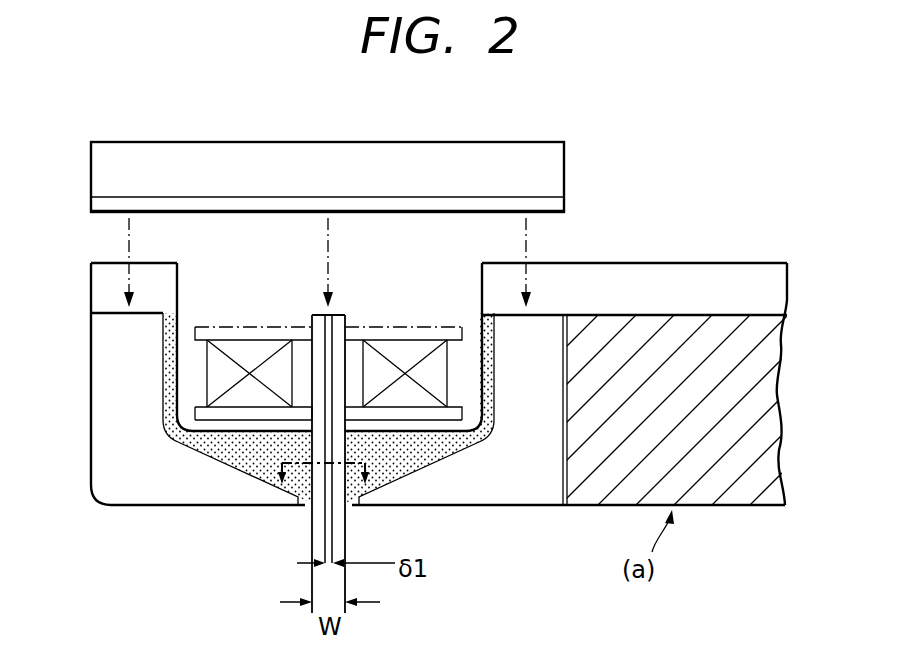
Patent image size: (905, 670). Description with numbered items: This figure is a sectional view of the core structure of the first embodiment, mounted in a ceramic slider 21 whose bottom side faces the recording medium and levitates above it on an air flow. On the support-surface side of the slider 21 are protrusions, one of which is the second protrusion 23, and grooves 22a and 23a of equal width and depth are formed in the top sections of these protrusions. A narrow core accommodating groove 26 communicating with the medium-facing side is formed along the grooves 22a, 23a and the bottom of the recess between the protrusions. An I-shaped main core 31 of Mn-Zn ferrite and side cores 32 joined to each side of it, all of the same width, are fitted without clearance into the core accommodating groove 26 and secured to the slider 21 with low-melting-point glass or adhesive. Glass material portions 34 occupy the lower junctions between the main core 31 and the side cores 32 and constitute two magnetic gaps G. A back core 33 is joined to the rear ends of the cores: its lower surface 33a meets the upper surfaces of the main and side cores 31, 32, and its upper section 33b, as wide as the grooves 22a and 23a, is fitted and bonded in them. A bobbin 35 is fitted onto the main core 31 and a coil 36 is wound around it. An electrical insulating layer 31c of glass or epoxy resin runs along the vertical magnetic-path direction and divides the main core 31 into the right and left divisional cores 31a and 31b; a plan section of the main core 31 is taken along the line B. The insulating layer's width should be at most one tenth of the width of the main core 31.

The back core 33 is at (368, 158).
The upper section of the back core 33b is at (493, 158).
The lower surface of the back core 33a is at (548, 214).
The groove 23a is at (703, 278).
The groove 22a is at (102, 280).
The main core 31 is at (322, 424).
The divisional core 31b is at (310, 323).
The electrical insulating layer 31c is at (331, 320).
The divisional core 31a is at (338, 323).
The coil 36 is at (213, 373).
The bobbin 35 is at (190, 413).
The glass material portions 34 is at (410, 458).
The side cores 32 is at (158, 490).
The core accommodating groove 26 is at (563, 462).
The slider 21 is at (731, 485).
The second protrusion 23 is at (758, 388).
The line B— B is at (277, 470).
The magnetic gaps G is at (305, 507).